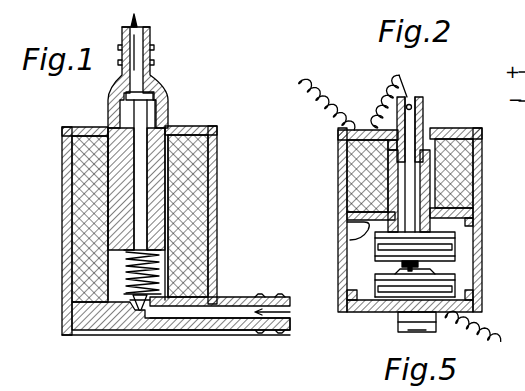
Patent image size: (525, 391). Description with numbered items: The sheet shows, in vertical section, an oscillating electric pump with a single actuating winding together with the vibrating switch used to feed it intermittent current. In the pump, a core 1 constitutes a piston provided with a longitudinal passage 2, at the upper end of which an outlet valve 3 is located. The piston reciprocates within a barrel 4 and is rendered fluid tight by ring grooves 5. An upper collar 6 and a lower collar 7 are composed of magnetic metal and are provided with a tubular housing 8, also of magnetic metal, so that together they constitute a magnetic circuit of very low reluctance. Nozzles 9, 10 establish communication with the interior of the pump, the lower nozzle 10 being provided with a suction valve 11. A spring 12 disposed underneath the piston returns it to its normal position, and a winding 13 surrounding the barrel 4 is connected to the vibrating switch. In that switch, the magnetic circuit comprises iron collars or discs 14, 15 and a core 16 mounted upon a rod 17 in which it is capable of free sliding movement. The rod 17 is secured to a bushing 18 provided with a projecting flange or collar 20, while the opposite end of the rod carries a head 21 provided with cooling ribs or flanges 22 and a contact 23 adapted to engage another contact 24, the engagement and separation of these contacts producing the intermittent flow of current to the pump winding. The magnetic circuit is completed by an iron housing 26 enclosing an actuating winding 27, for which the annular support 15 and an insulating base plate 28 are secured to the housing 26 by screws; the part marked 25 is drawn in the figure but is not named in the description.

In FIG. 1, the core 1 is at (168, 119).
In FIG. 1, the longitudinal passage 2 is at (136, 175).
In FIG. 1, the outlet valve 3 is at (154, 97).
In FIG. 1, the barrel 4 is at (166, 182).
In FIG. 1, the ring grooves 5 is at (118, 189).
In FIG. 1, the upper collar 6 is at (79, 127).
In FIG. 1, the lower collar 7 is at (88, 322).
In FIG. 1, the tubular housing 8 is at (62, 292).
In FIG. 1, the nozzle 9 is at (140, 69).
In FIG. 1, the nozzle 10 is at (195, 318).
In FIG. 1, the suction valve 11 is at (142, 308).
In FIG. 1, the spring 12 is at (163, 274).
In FIG. 1, the winding 13 is at (196, 236).
In FIG. 2, the iron collar 14 is at (471, 130).
In FIG. 2, the iron collar 15 is at (350, 241).
In FIG. 2, the core 16 is at (425, 197).
In FIG. 2, the rod 17 is at (412, 122).
In FIG. 2, the bushing 18 is at (412, 104).
In FIG. 2, the projecting flange 20 is at (347, 156).
In FIG. 2, the head 21 is at (440, 246).
In FIG. 2, the cooling ribs 22 is at (428, 255).
In FIG. 2, the contact 23 is at (405, 264).
In FIG. 2, the contact 24 is at (368, 312).
In FIG. 2, the terminal bolt 25 is at (407, 280).
In FIG. 2, the iron housing 26 is at (480, 215).
In FIG. 2, the actuating winding 27 is at (478, 166).
In FIG. 2, the insulating base plate 28 is at (463, 312).